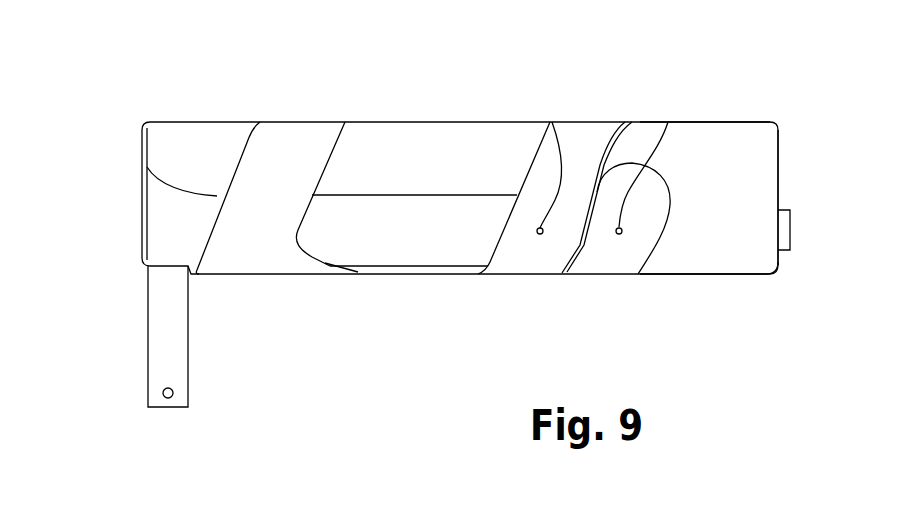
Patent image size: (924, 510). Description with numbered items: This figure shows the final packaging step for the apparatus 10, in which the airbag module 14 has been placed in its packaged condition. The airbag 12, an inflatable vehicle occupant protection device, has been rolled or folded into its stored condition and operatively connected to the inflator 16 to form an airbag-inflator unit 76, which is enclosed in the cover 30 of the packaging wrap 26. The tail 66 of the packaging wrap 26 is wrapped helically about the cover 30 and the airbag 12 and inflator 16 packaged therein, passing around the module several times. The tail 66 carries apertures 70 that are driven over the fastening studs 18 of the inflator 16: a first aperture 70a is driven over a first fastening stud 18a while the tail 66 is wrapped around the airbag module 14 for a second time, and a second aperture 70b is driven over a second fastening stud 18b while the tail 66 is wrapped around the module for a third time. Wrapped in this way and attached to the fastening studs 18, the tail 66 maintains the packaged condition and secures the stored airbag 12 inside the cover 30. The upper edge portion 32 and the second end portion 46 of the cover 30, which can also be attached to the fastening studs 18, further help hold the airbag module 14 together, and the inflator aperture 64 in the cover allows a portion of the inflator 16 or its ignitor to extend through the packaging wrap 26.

The apparatus 10 is at (200, 84).
The inflatable vehicle occupant protection device 12 is at (165, 331).
The airbag module 14 is at (193, 155).
The inflator 16 is at (788, 228).
The fastening studs 18 is at (590, 285).
The first fastening stud 18a is at (540, 234).
The second fastening stud 18b is at (619, 234).
The packaging wrap 26 is at (758, 153).
The cover 30 is at (713, 150).
The upper edge portion 32 is at (690, 253).
The second end portion 46 is at (447, 233).
The inflator aperture 64 is at (782, 257).
The tail 66 is at (287, 190).
The apertures 70 is at (606, 160).
The first aperture 70a is at (552, 122).
The second aperture 70b is at (668, 122).
The airbag-inflator unit 76 is at (728, 190).